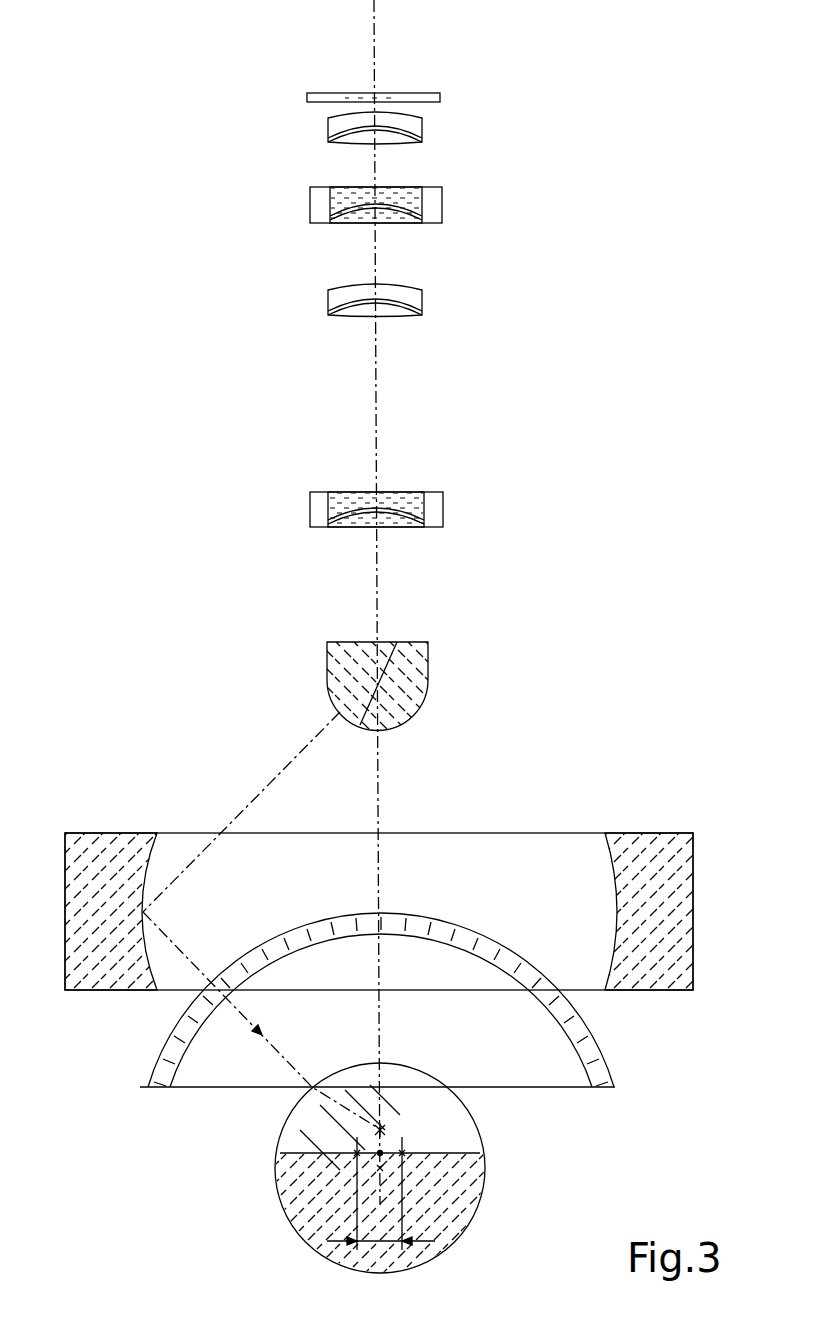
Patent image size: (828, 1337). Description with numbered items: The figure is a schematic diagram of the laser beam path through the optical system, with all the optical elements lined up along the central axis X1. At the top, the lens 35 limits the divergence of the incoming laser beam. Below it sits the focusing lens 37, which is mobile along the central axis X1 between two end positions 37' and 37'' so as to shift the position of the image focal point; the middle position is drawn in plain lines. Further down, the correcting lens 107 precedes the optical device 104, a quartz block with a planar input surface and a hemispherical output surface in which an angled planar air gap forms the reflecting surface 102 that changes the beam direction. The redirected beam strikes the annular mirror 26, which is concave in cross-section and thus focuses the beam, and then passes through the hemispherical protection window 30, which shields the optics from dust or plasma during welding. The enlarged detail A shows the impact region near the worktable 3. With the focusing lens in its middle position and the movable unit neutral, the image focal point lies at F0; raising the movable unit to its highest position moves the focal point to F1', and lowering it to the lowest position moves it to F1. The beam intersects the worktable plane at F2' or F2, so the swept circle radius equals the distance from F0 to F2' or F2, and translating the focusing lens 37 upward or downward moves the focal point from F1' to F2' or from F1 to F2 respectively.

The central axis X1 is at (376, 36).
The lens 35 is at (400, 98).
The focusing lens end position 37'' is at (417, 141).
The focusing lens 37 is at (404, 224).
The focusing lens end position 37' is at (414, 320).
The correcting lens 107 is at (410, 512).
The reflecting surface 102 is at (388, 660).
The optical device 104 is at (410, 697).
The annular mirror 26 is at (650, 838).
The hemispherical protection window 30 is at (600, 1058).
The detail circle A is at (486, 1148).
The worktable 3 is at (465, 1172).
The image focal point in neutral position F0 is at (376, 1158).
The image focal point in lowest position F1 is at (371, 1196).
The image focal point in highest position F1' is at (420, 1117).
The intersection of laser beam with worktable plane F2 is at (328, 1139).
The intersection of laser beam with worktable plane F2' is at (428, 1181).